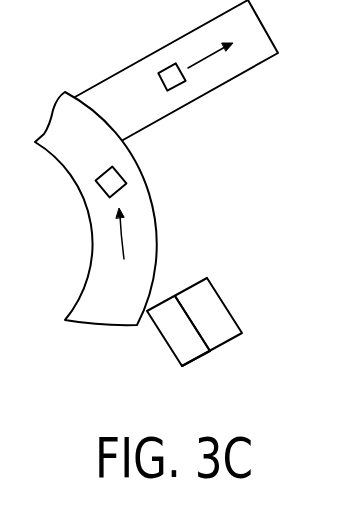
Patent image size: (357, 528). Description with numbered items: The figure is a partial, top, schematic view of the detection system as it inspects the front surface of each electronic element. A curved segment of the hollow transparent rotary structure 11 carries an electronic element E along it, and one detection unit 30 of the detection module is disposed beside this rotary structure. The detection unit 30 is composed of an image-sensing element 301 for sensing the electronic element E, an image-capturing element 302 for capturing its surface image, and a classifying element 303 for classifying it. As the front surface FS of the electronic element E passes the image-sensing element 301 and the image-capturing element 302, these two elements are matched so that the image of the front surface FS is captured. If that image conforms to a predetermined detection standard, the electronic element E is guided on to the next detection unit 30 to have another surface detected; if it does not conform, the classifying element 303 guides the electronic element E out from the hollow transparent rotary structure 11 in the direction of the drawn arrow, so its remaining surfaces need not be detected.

The hollow transparent rotary structure 11 is at (63, 88).
The detection unit 30 is at (242, 138).
The image-sensing element 301 is at (174, 298).
The image-capturing element 302 is at (221, 297).
The classifying element 303 is at (151, 118).
The electronic element E is at (86, 192).
The front surface FS is at (114, 196).